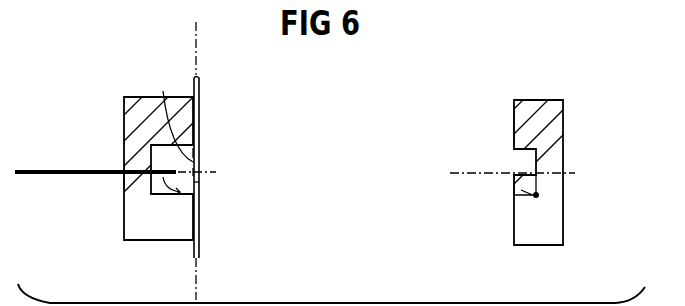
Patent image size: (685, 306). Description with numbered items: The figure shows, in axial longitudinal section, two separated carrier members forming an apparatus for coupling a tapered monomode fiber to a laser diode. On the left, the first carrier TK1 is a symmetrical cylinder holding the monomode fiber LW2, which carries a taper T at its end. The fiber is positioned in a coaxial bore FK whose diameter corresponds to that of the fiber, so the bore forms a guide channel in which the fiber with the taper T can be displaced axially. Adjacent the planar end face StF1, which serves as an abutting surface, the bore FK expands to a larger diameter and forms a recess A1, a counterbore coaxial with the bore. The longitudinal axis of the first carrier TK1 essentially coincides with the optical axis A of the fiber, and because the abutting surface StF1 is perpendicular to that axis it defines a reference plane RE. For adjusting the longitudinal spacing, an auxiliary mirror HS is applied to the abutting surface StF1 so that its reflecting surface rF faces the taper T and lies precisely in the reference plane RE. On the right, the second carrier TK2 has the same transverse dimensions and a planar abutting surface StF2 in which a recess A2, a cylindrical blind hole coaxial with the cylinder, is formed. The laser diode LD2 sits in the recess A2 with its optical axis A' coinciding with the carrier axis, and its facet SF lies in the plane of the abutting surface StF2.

The first carrier TK1 is at (129, 229).
The end face / abutting surface StF1 is at (199, 218).
The reference plane RE is at (197, 34).
The monomode fiber LW2 is at (47, 170).
The reflecting surface rF is at (174, 113).
The coaxial bore FK is at (127, 183).
The optical axis A is at (212, 146).
The recess A1 is at (200, 172).
The auxiliary mirror HS is at (203, 178).
The taper T is at (163, 195).
The second carrier TK2 is at (552, 112).
The optical axis A' is at (508, 155).
The end face / abutting surface StF2 is at (517, 125).
The recess A2 is at (520, 150).
The facet SF is at (515, 177).
The laser diode LD2 is at (537, 195).